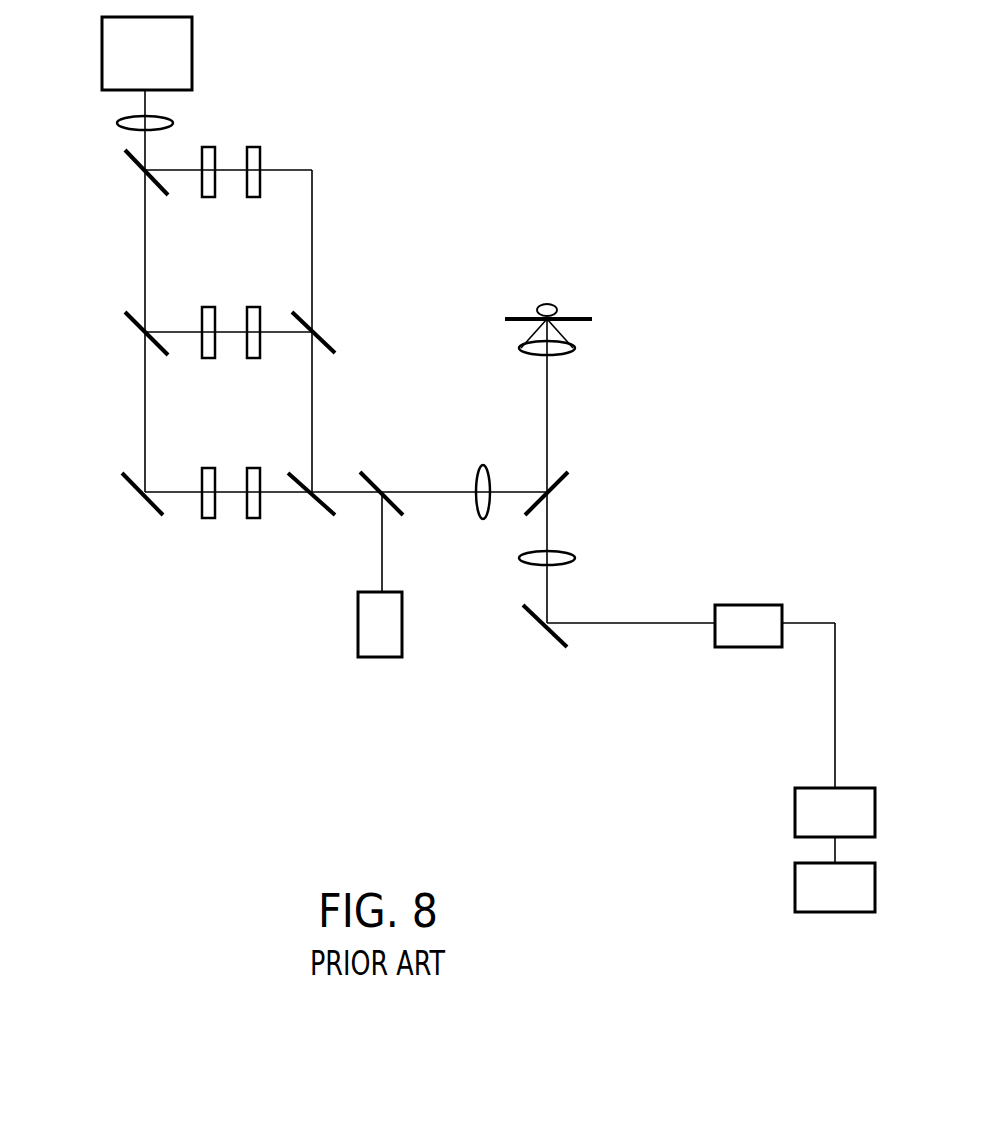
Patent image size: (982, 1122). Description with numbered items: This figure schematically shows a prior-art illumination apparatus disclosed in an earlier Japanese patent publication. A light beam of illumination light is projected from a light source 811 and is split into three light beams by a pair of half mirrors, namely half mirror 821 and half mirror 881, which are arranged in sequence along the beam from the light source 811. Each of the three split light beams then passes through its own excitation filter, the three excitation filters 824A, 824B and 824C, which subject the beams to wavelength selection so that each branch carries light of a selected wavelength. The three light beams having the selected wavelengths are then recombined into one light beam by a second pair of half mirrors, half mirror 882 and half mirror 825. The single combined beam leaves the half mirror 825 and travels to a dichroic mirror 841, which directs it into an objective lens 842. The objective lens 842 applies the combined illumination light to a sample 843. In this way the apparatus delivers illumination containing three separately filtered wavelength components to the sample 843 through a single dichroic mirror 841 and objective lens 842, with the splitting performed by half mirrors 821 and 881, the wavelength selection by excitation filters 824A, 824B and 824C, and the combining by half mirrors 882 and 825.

The light source 811 is at (102, 50).
The half mirror 821 is at (130, 158).
The half mirror 881 is at (128, 318).
The half mirror 882 is at (327, 343).
The excitation filter 824A is at (248, 518).
The excitation filter 824B is at (249, 197).
The excitation filter 824C is at (249, 358).
The half mirror 825 is at (330, 515).
The dichroic mirror 841 is at (568, 478).
The objective lens 842 is at (572, 354).
The sample 843 is at (557, 308).